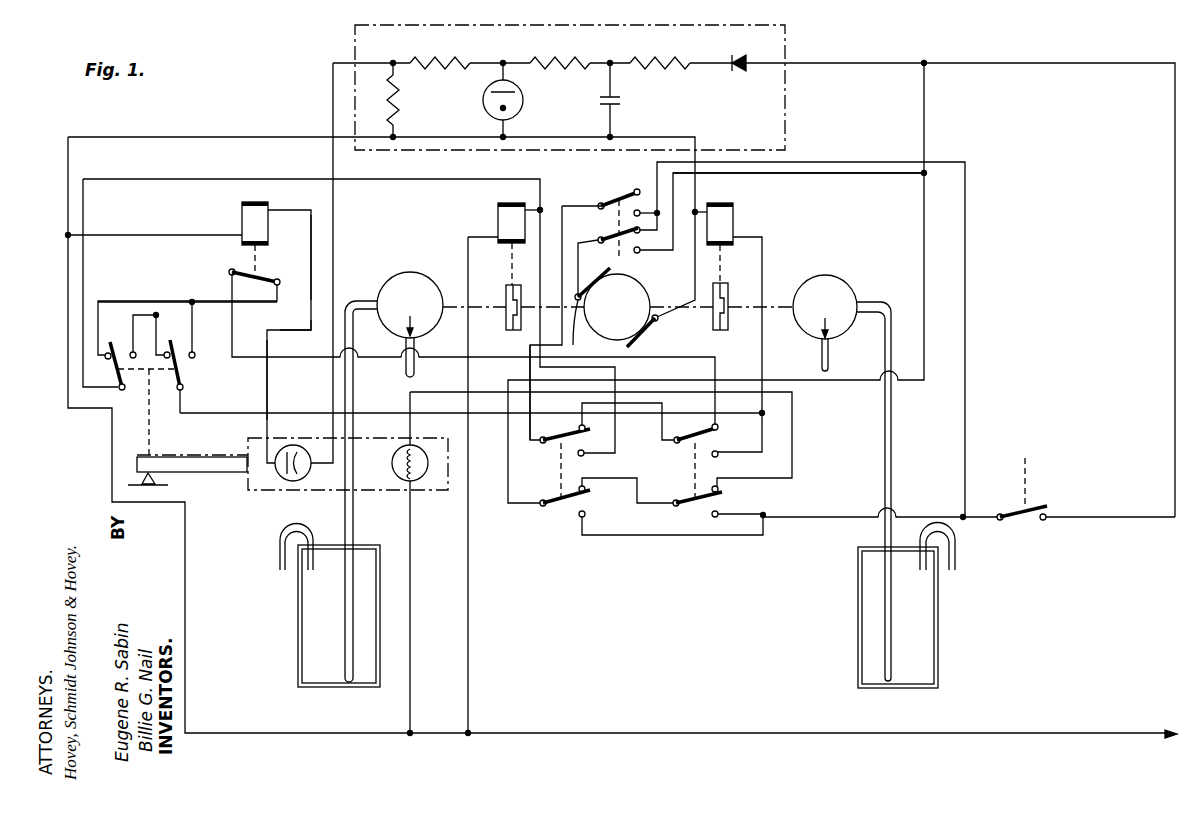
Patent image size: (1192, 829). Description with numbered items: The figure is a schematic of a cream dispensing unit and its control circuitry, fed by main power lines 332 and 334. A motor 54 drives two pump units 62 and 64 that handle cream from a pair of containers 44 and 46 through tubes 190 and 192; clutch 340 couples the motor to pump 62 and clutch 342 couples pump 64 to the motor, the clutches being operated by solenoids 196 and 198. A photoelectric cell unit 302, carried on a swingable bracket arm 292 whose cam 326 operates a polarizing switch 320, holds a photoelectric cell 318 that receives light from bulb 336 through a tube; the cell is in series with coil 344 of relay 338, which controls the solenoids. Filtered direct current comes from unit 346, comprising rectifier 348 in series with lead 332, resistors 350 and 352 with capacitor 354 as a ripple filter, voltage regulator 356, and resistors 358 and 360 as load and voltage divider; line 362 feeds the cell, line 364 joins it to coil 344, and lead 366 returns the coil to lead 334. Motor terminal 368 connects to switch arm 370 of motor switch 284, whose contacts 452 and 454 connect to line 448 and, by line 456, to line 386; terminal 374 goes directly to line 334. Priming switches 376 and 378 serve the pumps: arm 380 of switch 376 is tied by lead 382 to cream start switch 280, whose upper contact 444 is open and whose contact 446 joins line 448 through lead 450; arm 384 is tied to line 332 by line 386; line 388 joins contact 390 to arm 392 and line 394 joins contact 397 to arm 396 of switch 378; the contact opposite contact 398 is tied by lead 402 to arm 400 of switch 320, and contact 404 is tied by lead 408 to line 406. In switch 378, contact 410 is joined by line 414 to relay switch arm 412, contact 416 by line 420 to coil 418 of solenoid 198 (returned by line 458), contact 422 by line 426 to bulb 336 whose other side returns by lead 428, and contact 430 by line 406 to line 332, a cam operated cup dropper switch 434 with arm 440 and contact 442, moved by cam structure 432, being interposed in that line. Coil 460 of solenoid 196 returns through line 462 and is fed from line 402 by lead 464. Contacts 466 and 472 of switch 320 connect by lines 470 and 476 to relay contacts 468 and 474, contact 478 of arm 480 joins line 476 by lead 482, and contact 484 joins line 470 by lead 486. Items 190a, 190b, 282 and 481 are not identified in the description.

The cream container 44 is at (298, 638).
The cream container 46 is at (938, 634).
The motor 54 is at (650, 340).
The pump unit 62 is at (417, 278).
The pump unit 64 is at (832, 278).
The tube 190 is at (354, 520).
The pump outlet conduit 190a is at (415, 372).
The pump outlet conduit 190b is at (830, 356).
The tube 192 is at (893, 450).
The solenoid 196 is at (492, 208).
The solenoid 198 is at (740, 213).
The cream start switch 280 is at (598, 197).
The switch linkage 282 is at (613, 185).
The motor switch 284 is at (592, 243).
The swingable bracket arm 292 is at (204, 478).
The photoelectric cell unit 302 is at (270, 502).
The photoelectric cell 318 is at (296, 483).
The polarizing switch 320 is at (193, 392).
The cam 326 is at (152, 452).
The power line 332 is at (1024, 62).
The power line 334 is at (690, 335).
The electric light bulb 336 is at (418, 480).
The relay 338 is at (234, 212).
The clutch 340 is at (506, 282).
The clutch 342 is at (728, 334).
The relay coil 344 is at (268, 200).
The rectifying, filtering and voltage regulating unit 346 is at (796, 60).
The rectifier device 348 is at (740, 72).
The resistor 350 is at (666, 82).
The resistor 352 is at (562, 80).
The capacitor 354 is at (619, 102).
The voltage regulator device 356 is at (524, 100).
The resistor 358 is at (442, 80).
The resistor 360 is at (408, 118).
The line 362 is at (333, 110).
The line 364 is at (268, 372).
The lead 366 is at (148, 237).
The motor terminal 368 is at (568, 338).
The switch arm 370 is at (580, 290).
The motor terminal 374 is at (695, 296).
The priming switch 376 is at (538, 514).
The priming switch 378 is at (672, 510).
The switch arm 380 is at (560, 438).
The lead 382 is at (530, 362).
The switch arm 384 is at (553, 508).
The line 386 is at (966, 138).
The line 388 is at (658, 440).
The contact 390 is at (582, 415).
The switch arm 392 is at (686, 446).
The line 394 is at (640, 497).
The switch arm 396 is at (697, 506).
The contact 397 is at (586, 489).
The contact 398 is at (584, 456).
The switch arm 400 is at (143, 412).
The lead 402 is at (84, 268).
The contact 404 is at (584, 518).
The line 406 is at (806, 518).
The lead 408 is at (680, 536).
The upper contact 410 is at (718, 428).
The relay switch arm 412 is at (238, 268).
The line 414 is at (227, 335).
The contact 416 is at (717, 458).
The solenoid coil 418 is at (735, 232).
The line 420 is at (763, 258).
The upper contact 422 is at (720, 490).
The line 426 is at (410, 398).
The lead 428 is at (412, 594).
The lower contact 430 is at (720, 514).
The cam structure 432 is at (1035, 475).
The cup dropper switch 434 is at (999, 522).
The switch arm 440 is at (1004, 510).
The contact 442 is at (1042, 520).
The upper contact 444 is at (636, 188).
The contact 446 is at (640, 212).
The line 448 is at (657, 230).
The lead 450 is at (598, 210).
The contact 452 is at (634, 254).
The lower contact 454 is at (645, 258).
The line 456 is at (810, 173).
The line 458 is at (732, 202).
The solenoid coil 460 is at (498, 222).
The line 462 is at (470, 602).
The lead 464 is at (528, 206).
The contact 466 is at (112, 376).
The relay contact 468 is at (187, 317).
The line 470 is at (152, 301).
The contact 472 is at (130, 350).
The relay contact 474 is at (274, 250).
The line 476 is at (280, 330).
The contact 478 is at (164, 350).
The switch arm 480 is at (186, 370).
The conductor 481 is at (276, 413).
The lead 482 is at (140, 318).
The contact 484 is at (195, 352).
The lead 486 is at (194, 303).